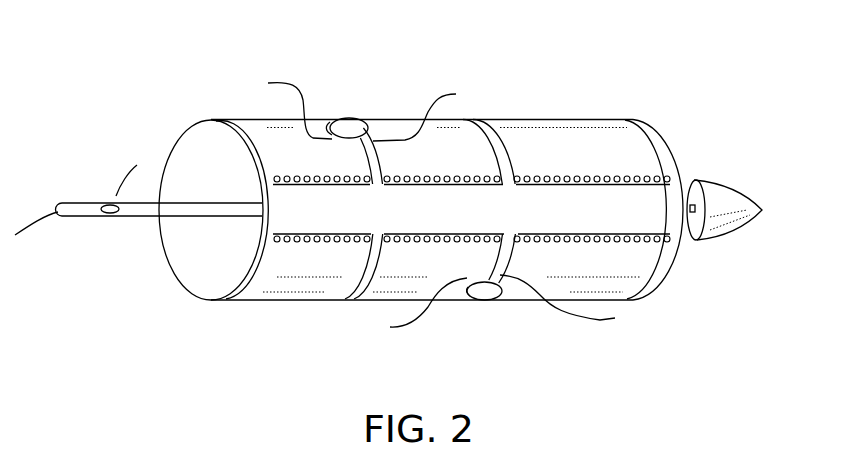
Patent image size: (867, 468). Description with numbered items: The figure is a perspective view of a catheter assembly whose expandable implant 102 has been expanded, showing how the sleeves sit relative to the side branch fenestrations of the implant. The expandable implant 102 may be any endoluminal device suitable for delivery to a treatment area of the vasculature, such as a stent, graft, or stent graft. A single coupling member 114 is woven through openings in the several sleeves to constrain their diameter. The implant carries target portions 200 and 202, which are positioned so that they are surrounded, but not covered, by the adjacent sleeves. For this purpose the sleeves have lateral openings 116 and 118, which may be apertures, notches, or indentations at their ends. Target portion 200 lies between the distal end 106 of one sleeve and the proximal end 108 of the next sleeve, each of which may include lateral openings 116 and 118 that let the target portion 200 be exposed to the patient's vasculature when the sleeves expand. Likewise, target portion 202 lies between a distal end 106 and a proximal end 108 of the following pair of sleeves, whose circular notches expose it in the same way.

The expandable implant 102 is at (192, 296).
The distal end 106 is at (350, 206).
The proximal end 108 is at (512, 205).
The coupling member 114 is at (115, 205).
The lateral opening 116 is at (327, 134).
The lateral opening 118 is at (364, 139).
The target portion 200 is at (373, 127).
The target portion 202 is at (500, 303).